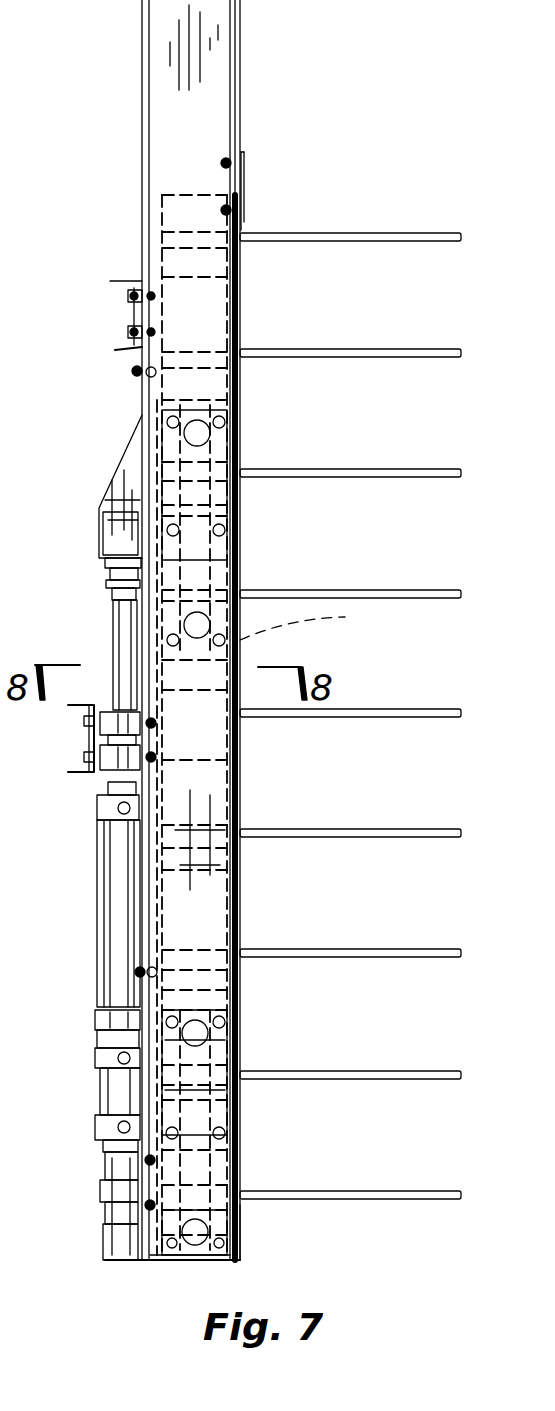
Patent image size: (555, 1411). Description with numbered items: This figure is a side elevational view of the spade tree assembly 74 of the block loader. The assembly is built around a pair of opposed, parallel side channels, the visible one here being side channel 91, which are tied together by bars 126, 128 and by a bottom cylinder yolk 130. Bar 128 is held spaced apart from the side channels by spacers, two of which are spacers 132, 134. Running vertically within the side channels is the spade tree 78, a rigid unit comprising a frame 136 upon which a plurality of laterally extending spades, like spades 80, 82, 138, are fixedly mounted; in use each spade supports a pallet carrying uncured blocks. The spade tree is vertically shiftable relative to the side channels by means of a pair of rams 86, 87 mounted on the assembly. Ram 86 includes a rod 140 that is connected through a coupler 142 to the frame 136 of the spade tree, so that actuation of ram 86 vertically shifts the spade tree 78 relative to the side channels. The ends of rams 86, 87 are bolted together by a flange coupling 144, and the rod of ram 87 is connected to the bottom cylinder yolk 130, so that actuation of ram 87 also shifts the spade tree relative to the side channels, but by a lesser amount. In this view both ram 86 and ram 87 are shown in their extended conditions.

The spade tree assembly 74 is at (258, 71).
The spade tree 78 is at (244, 1208).
The spade 80 is at (458, 1191).
The spade 82 is at (458, 1071).
The ram 86 is at (112, 905).
The ram 87 is at (100, 1092).
The side channel 91 is at (154, 66).
The bar 126 is at (110, 281).
The bar 128 is at (80, 722).
The bottom cylinder yolk 130 is at (105, 1246).
The spacer 132 is at (110, 712).
The spacer 134 is at (102, 782).
The frame 136 is at (345, 617).
The spade 138 is at (460, 710).
The rod 140 is at (118, 632).
The coupler 142 is at (110, 582).
The flange coupling 144 is at (96, 1030).